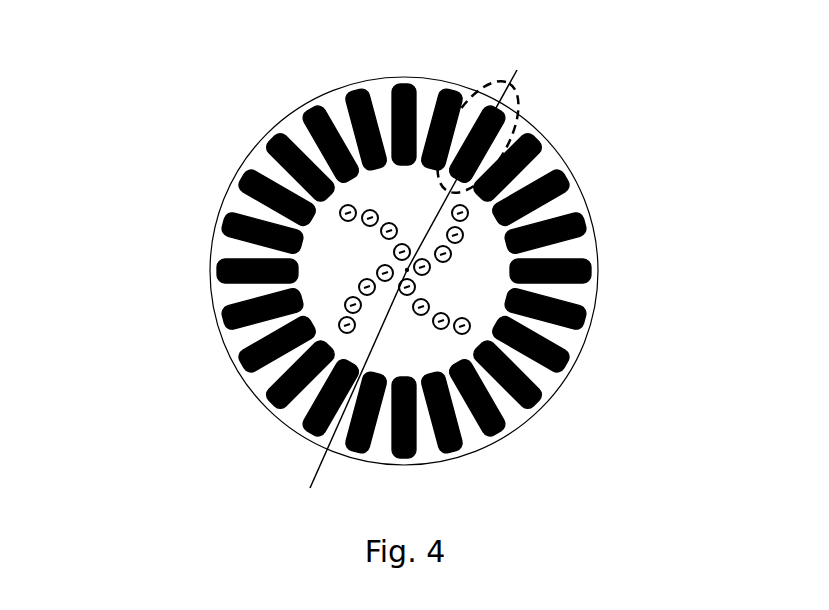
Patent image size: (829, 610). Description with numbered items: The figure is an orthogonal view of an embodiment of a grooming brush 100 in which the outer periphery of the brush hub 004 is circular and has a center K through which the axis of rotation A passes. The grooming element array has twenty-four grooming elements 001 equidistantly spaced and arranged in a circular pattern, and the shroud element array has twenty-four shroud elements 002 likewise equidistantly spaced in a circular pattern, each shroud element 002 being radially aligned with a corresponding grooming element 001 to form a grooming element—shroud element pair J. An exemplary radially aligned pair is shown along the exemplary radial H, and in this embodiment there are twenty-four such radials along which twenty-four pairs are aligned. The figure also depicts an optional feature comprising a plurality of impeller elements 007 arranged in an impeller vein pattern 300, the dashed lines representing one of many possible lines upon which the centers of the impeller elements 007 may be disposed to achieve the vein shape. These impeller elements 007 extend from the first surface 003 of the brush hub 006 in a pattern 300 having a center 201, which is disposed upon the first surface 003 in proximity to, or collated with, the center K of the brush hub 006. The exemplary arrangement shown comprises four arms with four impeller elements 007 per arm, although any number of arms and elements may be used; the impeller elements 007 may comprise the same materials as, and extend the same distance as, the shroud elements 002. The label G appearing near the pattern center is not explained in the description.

The grooming brush 100 is at (399, 259).
The grooming element 001 is at (224, 302).
The shroud element 002 is at (216, 283).
The first surface 003 is at (547, 160).
The brush hub 006 is at (531, 197).
The brush hub 004 is at (233, 169).
The impeller element 007 is at (470, 322).
The impeller vein pattern 300 is at (471, 250).
The center 201 is at (399, 280).
The center K is at (363, 335).
The axis of rotation A is at (345, 393).
The radial H is at (506, 99).
The grooming element-shroud element pair J is at (478, 104).
The stator center G is at (418, 284).